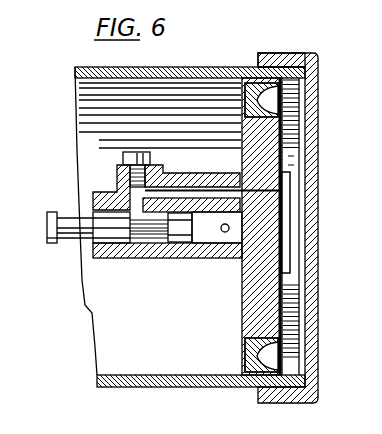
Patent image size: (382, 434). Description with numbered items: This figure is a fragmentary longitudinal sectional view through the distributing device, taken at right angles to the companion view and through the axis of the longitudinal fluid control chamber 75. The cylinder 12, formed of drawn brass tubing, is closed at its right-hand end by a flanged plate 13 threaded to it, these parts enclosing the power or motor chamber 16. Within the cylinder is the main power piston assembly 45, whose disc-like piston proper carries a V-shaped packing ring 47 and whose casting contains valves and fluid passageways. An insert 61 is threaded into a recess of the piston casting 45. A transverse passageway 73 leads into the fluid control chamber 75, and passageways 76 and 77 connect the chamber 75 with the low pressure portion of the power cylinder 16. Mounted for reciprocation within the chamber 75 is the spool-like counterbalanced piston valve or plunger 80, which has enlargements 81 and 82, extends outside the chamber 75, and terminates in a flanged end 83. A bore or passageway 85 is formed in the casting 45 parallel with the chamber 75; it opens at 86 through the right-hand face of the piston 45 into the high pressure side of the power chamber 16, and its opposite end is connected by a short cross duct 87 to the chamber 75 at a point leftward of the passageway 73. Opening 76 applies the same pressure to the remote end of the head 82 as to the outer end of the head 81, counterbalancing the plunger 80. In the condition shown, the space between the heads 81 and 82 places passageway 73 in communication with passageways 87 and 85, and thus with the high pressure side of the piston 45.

The cylinder 12 is at (76, 69).
The flanged plate 13 is at (315, 101).
The power or motor chamber 16 is at (100, 100).
The main power piston assembly 45 is at (233, 158).
The V-shaped packing ring 47 is at (272, 70).
The insert 61 is at (286, 226).
The transverse passageway 73 is at (151, 243).
The longitudinal fluid control chamber 75 is at (213, 237).
The passageway 76 is at (225, 232).
The passageway 77 is at (180, 243).
The piston valve or plunger 80 is at (72, 230).
The enlargement 81 is at (100, 243).
The enlargement 82 is at (173, 243).
The flanged end 83 is at (47, 212).
The bore or passageway 85 is at (185, 195).
The opening 86 is at (278, 193).
The short cross duct 87 is at (135, 203).